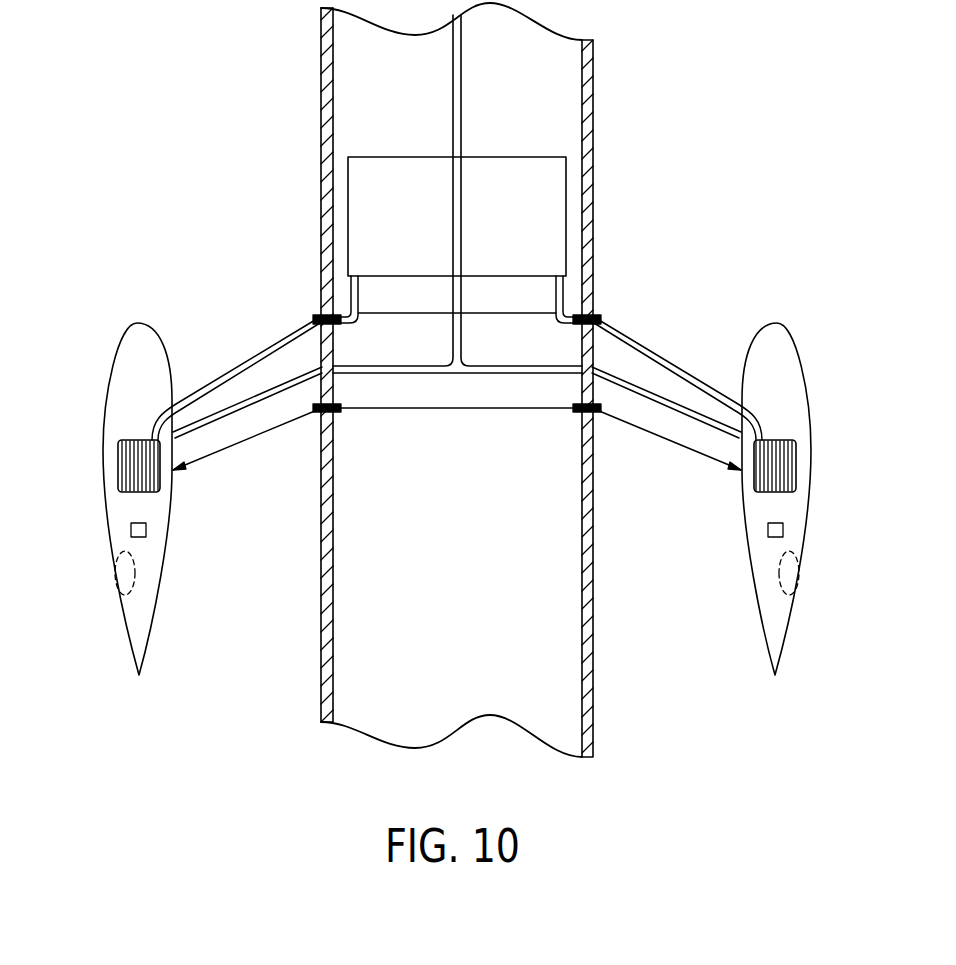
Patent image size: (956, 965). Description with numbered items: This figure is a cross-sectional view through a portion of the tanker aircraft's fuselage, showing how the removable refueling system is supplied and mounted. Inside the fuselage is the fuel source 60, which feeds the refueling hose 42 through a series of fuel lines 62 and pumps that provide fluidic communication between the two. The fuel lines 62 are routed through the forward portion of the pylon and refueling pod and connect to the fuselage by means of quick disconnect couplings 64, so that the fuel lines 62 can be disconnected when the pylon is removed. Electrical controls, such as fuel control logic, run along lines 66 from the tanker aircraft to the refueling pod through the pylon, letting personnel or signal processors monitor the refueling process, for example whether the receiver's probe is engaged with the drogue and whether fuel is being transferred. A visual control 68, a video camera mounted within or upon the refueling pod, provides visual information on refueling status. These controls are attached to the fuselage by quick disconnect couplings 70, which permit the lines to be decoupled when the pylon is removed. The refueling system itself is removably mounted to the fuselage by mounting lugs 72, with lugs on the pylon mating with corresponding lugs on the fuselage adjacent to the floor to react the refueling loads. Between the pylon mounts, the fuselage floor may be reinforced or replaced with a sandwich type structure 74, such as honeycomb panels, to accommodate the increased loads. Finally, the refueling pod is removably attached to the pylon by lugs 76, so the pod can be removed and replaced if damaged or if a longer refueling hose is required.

The refueling hose 42 is at (788, 438).
The fuel source 60 is at (548, 212).
The fuel lines 62 is at (254, 357).
The quick disconnect couplings 64 is at (320, 320).
The lines 66 is at (243, 411).
The visual control 68 is at (130, 528).
The quick disconnect couplings 70 is at (301, 384).
The mounting lugs 72 is at (320, 319).
The sandwich type structure 74 is at (419, 397).
The lugs 76 is at (175, 404).